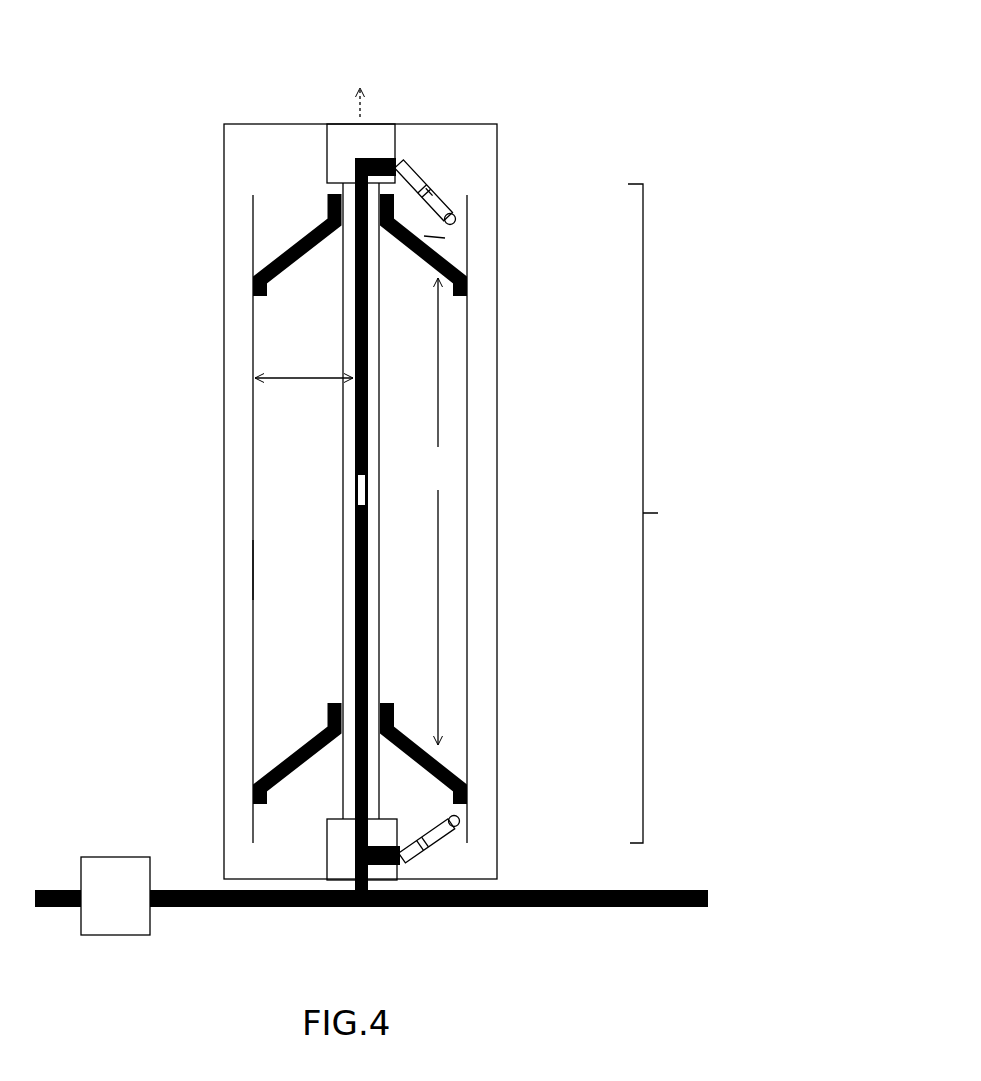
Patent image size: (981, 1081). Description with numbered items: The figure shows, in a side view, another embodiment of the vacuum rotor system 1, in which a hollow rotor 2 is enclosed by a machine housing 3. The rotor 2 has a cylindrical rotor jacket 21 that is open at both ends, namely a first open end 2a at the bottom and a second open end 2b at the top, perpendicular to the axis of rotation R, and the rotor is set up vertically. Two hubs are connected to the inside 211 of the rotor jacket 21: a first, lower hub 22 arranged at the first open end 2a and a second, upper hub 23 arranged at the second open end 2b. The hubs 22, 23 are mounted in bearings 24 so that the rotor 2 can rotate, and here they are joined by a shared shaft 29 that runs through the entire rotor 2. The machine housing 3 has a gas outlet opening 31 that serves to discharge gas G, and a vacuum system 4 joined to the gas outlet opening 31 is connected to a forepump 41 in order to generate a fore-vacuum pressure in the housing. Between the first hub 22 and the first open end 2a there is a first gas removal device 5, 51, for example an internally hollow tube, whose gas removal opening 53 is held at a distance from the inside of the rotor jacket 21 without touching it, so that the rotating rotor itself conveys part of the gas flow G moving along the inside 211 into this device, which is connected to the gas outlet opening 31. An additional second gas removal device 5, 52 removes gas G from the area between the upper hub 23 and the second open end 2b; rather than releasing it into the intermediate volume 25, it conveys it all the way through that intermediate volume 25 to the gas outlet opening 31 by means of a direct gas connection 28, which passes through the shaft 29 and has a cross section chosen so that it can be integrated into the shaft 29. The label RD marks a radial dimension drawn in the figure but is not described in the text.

The vacuum rotor system 1 is at (463, 77).
The hollow rotor 2 is at (399, 495).
The first open end 2a is at (287, 860).
The second open end 2b is at (285, 184).
The machine housing 3 is at (223, 170).
The vacuum system 4 is at (555, 908).
The forepump 41 is at (115, 896).
The gas removal device 5 is at (490, 483).
The first gas removal device 51 is at (492, 804).
The second gas removal device 52 is at (424, 183).
The gas removal opening 53 is at (459, 821).
The rotor jacket 21 is at (285, 520).
The inside of the rotor jacket 211 is at (258, 573).
The first hub 22 is at (303, 740).
The second hub 23 is at (286, 278).
The bearings 24 is at (323, 152).
The intermediate volume 25 is at (437, 511).
The direct gas connection 28 is at (353, 650).
The shaft 29 is at (384, 347).
The gas outlet opening 31 is at (350, 858).
The gas G is at (350, 487).
The axis of rotation R is at (360, 86).
The radial distance RD is at (299, 386).